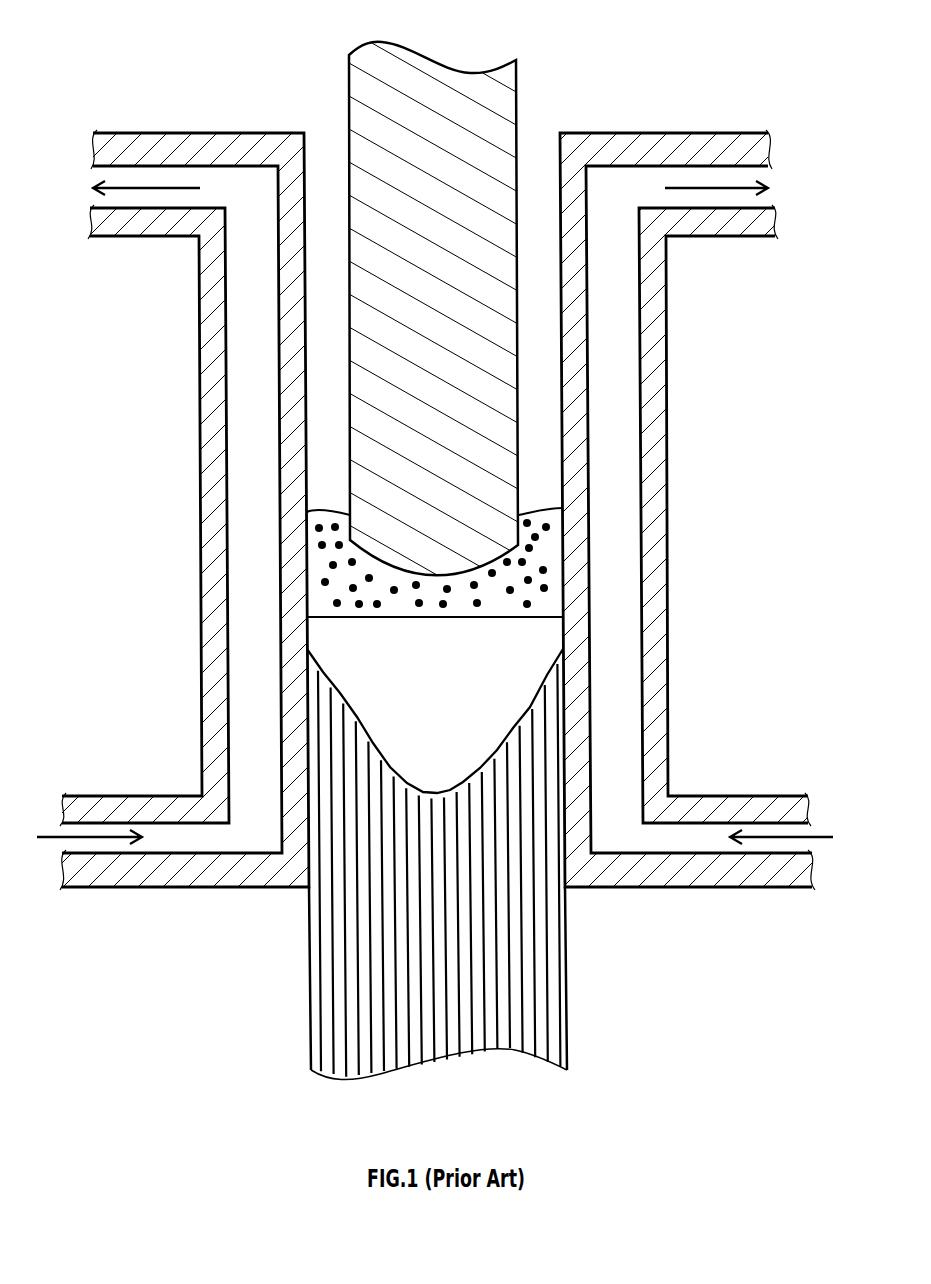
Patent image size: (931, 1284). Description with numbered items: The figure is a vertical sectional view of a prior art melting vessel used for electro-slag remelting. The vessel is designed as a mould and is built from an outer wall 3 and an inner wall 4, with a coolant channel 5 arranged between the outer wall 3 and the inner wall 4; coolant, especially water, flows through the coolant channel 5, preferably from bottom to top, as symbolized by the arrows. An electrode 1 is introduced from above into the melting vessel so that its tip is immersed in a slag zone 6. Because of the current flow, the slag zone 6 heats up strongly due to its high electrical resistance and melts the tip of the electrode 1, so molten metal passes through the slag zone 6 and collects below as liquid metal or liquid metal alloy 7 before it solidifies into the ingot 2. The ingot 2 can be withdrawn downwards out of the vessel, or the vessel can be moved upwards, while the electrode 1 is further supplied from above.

The electrode 1 is at (519, 96).
The ingot 2 is at (568, 980).
The outer wall 3 is at (197, 268).
The inner wall 4 is at (278, 277).
The coolant channel 5 is at (245, 385).
The slag zone 6 is at (541, 553).
The liquid metal or liquid metal alloy 7 is at (512, 652).